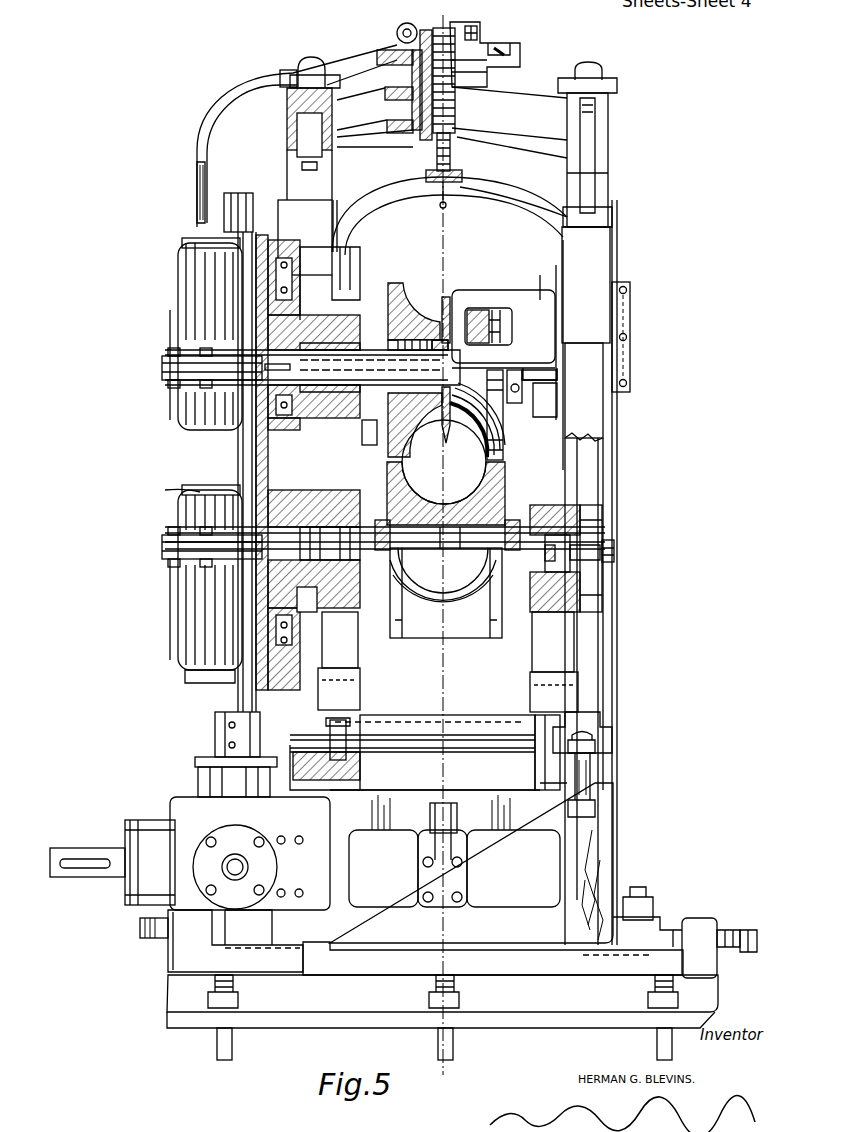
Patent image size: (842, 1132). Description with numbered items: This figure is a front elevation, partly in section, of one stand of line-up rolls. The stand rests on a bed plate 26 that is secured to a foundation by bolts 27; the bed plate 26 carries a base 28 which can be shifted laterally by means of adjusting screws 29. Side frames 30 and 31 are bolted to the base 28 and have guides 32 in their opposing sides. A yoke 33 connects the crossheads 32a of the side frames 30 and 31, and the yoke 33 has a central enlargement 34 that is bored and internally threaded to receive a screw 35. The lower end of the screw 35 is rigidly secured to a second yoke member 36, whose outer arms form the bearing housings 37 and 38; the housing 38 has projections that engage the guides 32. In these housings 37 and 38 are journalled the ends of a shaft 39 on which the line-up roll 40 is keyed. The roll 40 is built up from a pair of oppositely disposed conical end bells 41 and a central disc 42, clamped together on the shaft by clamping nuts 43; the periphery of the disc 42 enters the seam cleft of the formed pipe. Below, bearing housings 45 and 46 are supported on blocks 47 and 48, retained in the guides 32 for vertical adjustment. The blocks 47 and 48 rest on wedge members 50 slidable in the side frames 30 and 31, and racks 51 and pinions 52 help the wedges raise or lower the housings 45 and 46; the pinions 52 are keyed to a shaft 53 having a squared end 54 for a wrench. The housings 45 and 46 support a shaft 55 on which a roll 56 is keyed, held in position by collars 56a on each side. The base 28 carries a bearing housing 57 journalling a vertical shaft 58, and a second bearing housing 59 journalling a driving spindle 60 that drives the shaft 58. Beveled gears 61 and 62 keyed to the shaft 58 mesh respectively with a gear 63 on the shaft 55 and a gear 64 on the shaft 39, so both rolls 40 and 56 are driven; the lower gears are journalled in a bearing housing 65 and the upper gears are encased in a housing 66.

The bed plate 26 is at (720, 990).
The bolts 27 is at (220, 1003).
The base 28 is at (593, 865).
The adjusting screws 29 is at (737, 928).
The side frame 30 is at (598, 480).
The side frame 31 is at (258, 470).
The guides 32 is at (618, 500).
The crossheads 32a is at (288, 140).
The yoke 33 is at (518, 95).
The central enlargement 34 is at (472, 60).
The screw 35 is at (455, 130).
The second yoke member 36 is at (413, 205).
The bearing housing 37 is at (360, 300).
The bearing housing 38 is at (530, 312).
The shaft 39 is at (397, 295).
The line-up roll 40 is at (444, 320).
The conical end bells 41 is at (435, 410).
The central disc 42 is at (446, 440).
The clamping nuts 43 is at (390, 420).
The bearing housing 45 is at (540, 508).
The bearing housing 46 is at (338, 512).
The block 47 is at (545, 650).
The block 48 is at (340, 650).
The wedge members 50 is at (350, 686).
The racks 51 is at (350, 712).
The pinions 52 is at (355, 752).
The shaft 53 is at (495, 745).
The squared end 54 is at (618, 745).
The shaft 55 is at (575, 518).
The roll 56 is at (380, 520).
The collars 56a is at (512, 520).
The bearing housing 57 is at (190, 800).
The vertical shaft 58 is at (235, 700).
The second bearing housing 59 is at (150, 825).
The driving spindle 60 is at (92, 850).
The beveled gear 61 is at (255, 570).
The beveled gear 62 is at (262, 345).
The gear 63 is at (262, 520).
The gear 64 is at (260, 355).
The bearing housing 65 is at (195, 578).
The housing 66 is at (245, 320).